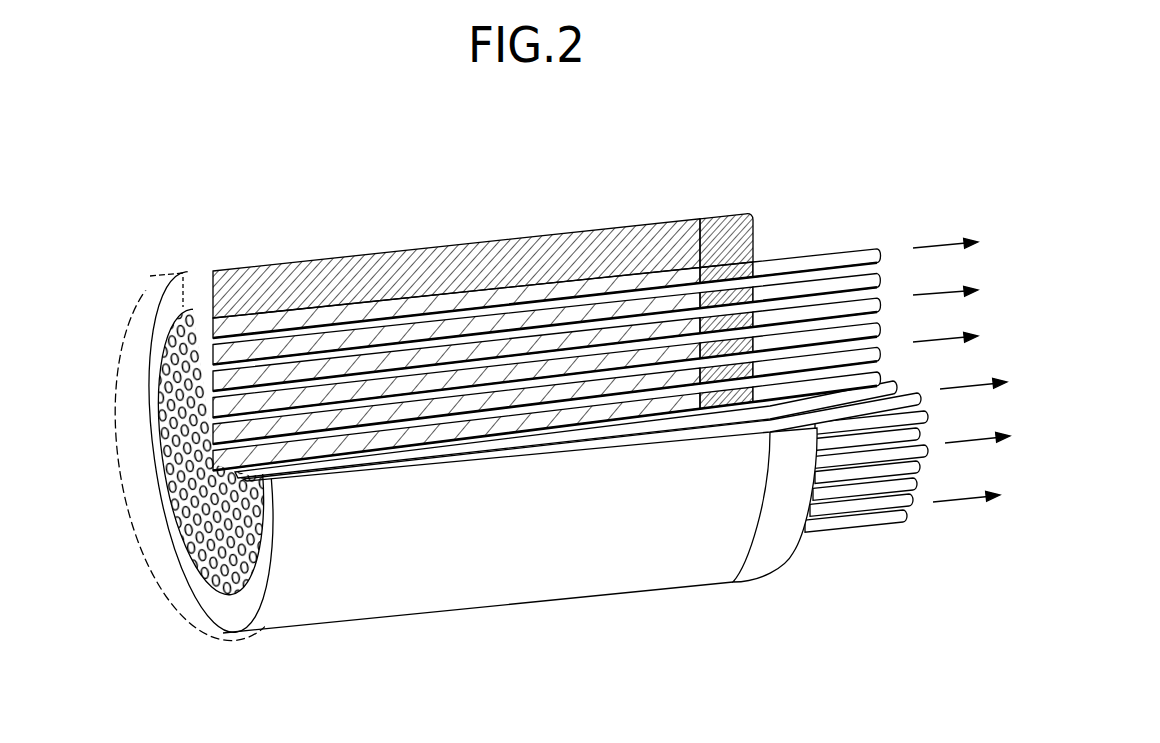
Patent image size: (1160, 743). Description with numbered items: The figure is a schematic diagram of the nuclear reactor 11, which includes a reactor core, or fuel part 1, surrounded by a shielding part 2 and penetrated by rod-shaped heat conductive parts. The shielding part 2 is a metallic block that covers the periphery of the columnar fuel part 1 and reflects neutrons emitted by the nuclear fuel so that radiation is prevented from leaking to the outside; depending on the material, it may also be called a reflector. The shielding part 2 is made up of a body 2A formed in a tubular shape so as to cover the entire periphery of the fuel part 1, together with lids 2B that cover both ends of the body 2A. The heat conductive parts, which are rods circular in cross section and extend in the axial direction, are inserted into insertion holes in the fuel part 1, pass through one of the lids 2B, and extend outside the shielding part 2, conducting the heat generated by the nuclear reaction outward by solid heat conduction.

The fuel part 1 is at (177, 507).
The shielding part 2 is at (510, 395).
The body 2A is at (198, 290).
The lids 2B is at (135, 287).
The nuclear reactor 11 is at (807, 122).